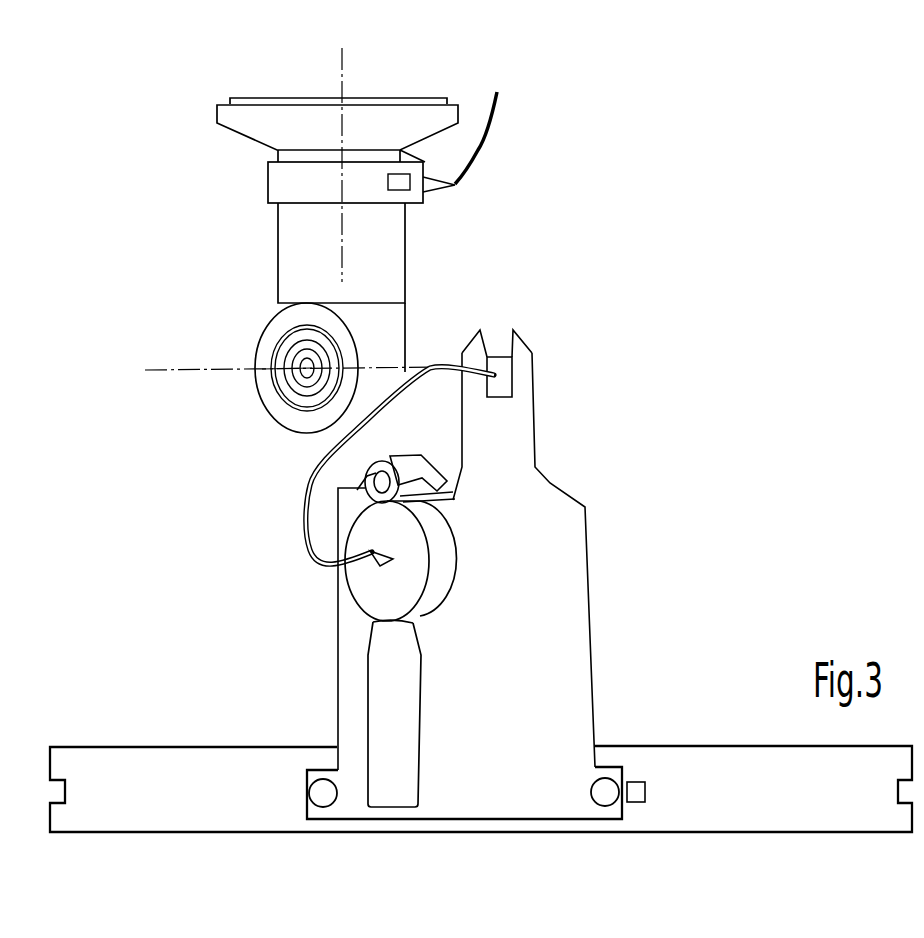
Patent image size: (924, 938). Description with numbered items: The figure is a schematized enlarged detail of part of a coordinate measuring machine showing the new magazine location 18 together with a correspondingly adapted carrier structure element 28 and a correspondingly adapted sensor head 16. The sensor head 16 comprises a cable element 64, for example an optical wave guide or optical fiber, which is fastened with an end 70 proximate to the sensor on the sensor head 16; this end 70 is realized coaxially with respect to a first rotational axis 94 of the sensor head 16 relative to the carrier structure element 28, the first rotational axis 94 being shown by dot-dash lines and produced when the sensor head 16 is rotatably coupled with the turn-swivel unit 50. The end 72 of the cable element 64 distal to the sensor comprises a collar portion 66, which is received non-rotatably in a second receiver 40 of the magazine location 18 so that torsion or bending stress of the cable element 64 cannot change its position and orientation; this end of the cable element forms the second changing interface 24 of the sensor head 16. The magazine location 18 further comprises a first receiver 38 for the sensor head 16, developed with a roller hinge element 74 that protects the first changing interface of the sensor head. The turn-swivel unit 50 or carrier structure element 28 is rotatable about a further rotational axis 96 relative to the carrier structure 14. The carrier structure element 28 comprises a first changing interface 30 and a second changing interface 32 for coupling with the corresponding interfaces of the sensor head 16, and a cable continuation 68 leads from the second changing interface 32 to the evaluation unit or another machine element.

The carrier structure 14 is at (260, 110).
The sensor head 16 is at (387, 653).
The magazine location 18 is at (617, 580).
The second changing interface 24 is at (537, 370).
The carrier structure element 28 is at (513, 195).
The first changing interface 30 is at (263, 360).
The second changing interface 32 is at (430, 160).
The first receiver 38 is at (338, 505).
The second receiver 40 is at (522, 326).
The turn-swivel unit 50 is at (275, 245).
The cable element 64 is at (430, 375).
The collar portion 66 is at (502, 372).
The cable continuation 68 is at (497, 96).
The end proximate to the sensor 70 is at (370, 558).
The end distal to the sensor 72 is at (476, 357).
The roller hinge element 74 is at (367, 470).
The first rotational axis 94 is at (170, 372).
The further rotational axis 96 is at (342, 67).